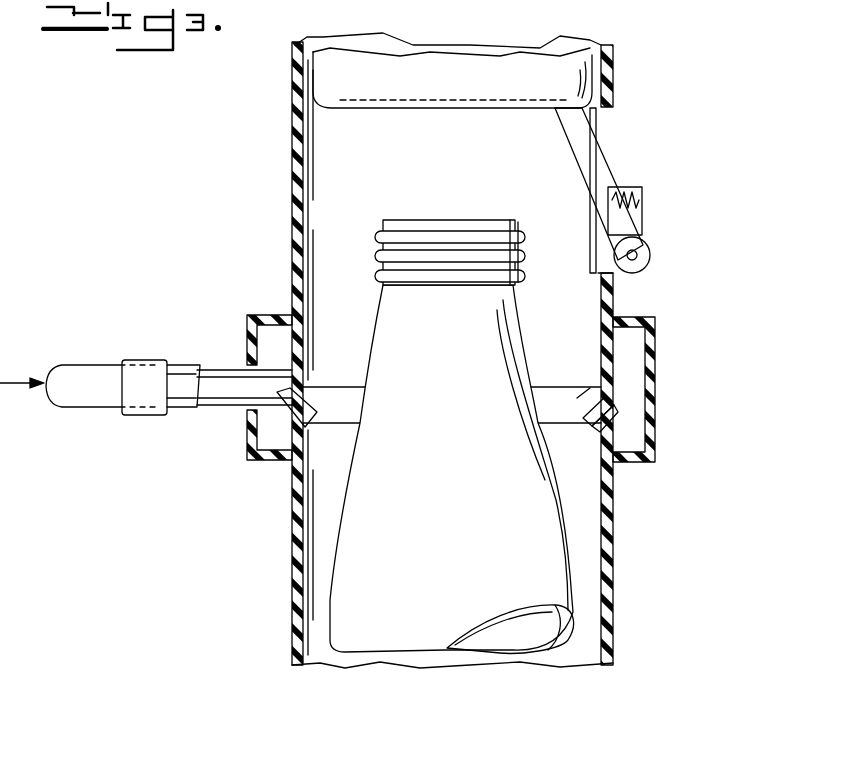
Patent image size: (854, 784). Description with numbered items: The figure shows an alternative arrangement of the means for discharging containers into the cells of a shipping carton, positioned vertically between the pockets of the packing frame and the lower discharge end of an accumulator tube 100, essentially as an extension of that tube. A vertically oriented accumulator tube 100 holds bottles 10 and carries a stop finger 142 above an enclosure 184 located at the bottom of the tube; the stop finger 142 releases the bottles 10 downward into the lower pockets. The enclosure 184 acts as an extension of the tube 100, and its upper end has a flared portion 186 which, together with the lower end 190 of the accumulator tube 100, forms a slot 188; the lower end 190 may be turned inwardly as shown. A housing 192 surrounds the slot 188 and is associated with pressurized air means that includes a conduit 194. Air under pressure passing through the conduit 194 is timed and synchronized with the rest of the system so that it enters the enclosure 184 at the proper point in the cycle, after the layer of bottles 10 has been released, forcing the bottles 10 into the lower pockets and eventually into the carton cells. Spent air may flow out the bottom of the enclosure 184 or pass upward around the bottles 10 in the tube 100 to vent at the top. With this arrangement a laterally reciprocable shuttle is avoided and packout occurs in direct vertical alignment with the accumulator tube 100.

The bottle 10 is at (470, 110).
The accumulator tube 100 is at (613, 298).
The stop finger 142 is at (593, 148).
The enclosure 184 is at (613, 498).
The flared portion 186 is at (614, 428).
The slot 188 is at (606, 405).
The lower end 190 is at (589, 405).
The housing 192 is at (648, 338).
The conduit 194 is at (140, 415).